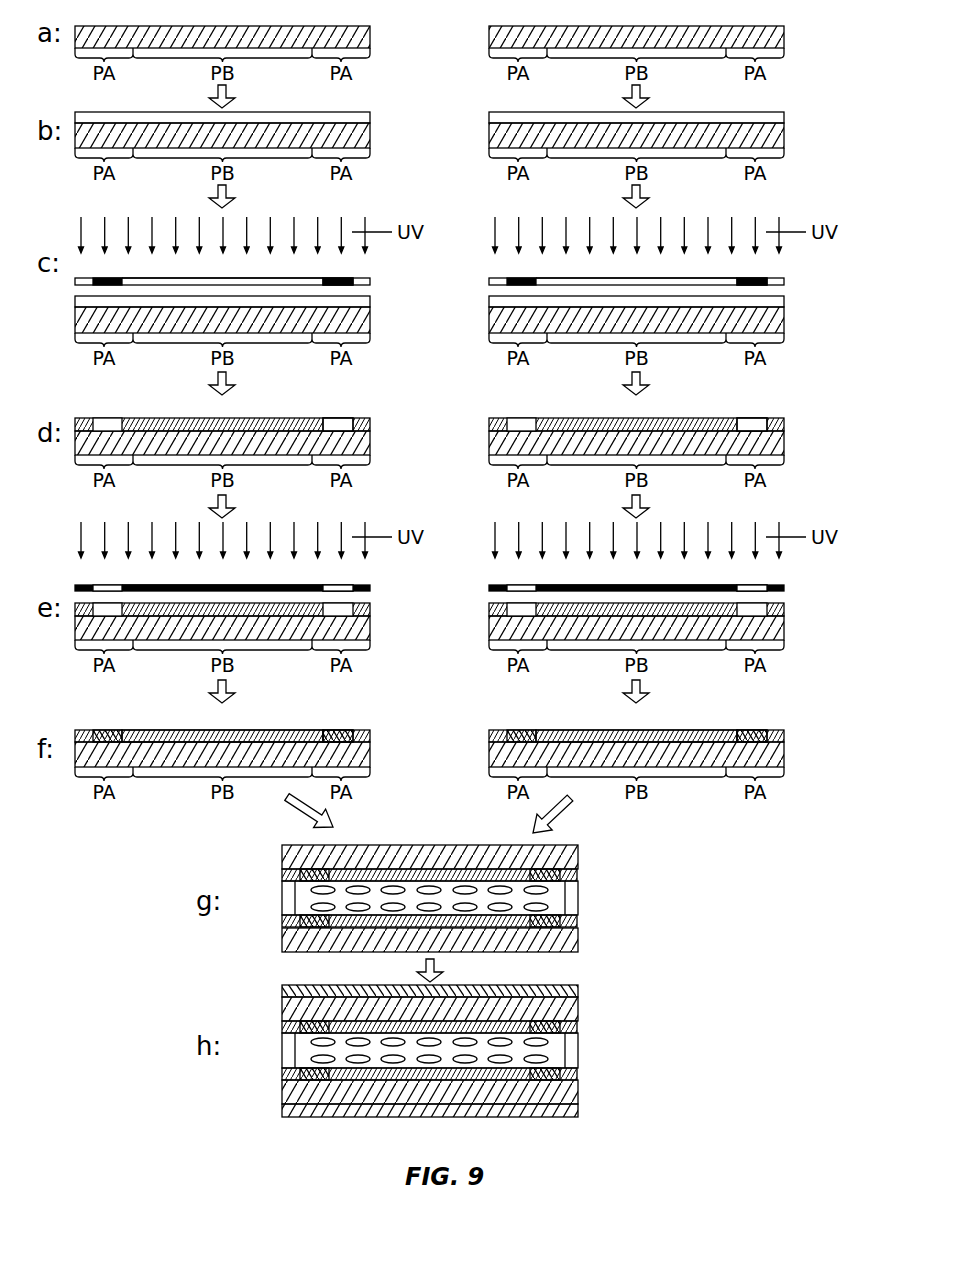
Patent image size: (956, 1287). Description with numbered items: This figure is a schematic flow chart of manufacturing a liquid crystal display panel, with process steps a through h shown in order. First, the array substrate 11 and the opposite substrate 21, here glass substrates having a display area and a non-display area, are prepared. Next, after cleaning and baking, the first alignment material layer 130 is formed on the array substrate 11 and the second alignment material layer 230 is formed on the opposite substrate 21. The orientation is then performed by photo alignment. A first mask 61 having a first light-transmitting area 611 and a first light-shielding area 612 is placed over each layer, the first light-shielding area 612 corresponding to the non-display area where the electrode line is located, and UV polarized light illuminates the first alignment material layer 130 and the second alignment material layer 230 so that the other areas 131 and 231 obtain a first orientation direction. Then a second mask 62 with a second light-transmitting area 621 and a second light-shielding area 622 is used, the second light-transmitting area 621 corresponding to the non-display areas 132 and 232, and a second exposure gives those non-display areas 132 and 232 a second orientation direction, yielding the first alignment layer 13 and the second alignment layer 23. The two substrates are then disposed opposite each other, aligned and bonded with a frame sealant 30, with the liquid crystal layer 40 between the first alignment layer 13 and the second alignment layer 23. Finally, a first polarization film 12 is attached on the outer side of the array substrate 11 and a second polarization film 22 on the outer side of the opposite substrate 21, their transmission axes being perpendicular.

The array substrate 11 is at (366, 41).
The first polarization film 12 is at (565, 1111).
The first alignment layer 13 is at (366, 737).
The first alignment material layer 130 is at (366, 120).
The other area 131 is at (247, 421).
The non-display area 132 is at (338, 424).
The opposite substrate 21 is at (780, 41).
The second polarization film 22 is at (565, 991).
The second alignment layer 23 is at (780, 737).
The second alignment material layer 230 is at (780, 120).
The other area 231 is at (661, 421).
The non-display area 232 is at (752, 424).
The frame sealant 30 is at (570, 888).
The liquid crystal layer 40 is at (555, 905).
The first mask 61 is at (366, 282).
The first light-transmitting area 611 is at (247, 279).
The first light-shielding area 612 is at (337, 279).
The second mask 62 is at (366, 589).
The second light-transmitting area 621 is at (337, 587).
The second light-shielding area 622 is at (247, 586).